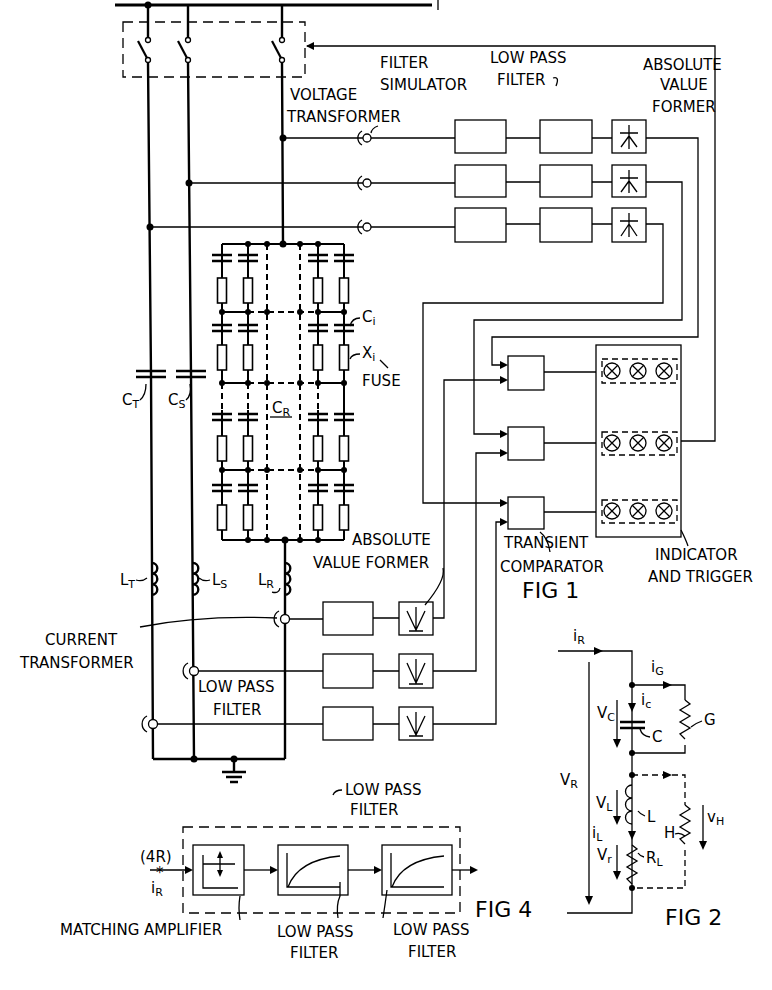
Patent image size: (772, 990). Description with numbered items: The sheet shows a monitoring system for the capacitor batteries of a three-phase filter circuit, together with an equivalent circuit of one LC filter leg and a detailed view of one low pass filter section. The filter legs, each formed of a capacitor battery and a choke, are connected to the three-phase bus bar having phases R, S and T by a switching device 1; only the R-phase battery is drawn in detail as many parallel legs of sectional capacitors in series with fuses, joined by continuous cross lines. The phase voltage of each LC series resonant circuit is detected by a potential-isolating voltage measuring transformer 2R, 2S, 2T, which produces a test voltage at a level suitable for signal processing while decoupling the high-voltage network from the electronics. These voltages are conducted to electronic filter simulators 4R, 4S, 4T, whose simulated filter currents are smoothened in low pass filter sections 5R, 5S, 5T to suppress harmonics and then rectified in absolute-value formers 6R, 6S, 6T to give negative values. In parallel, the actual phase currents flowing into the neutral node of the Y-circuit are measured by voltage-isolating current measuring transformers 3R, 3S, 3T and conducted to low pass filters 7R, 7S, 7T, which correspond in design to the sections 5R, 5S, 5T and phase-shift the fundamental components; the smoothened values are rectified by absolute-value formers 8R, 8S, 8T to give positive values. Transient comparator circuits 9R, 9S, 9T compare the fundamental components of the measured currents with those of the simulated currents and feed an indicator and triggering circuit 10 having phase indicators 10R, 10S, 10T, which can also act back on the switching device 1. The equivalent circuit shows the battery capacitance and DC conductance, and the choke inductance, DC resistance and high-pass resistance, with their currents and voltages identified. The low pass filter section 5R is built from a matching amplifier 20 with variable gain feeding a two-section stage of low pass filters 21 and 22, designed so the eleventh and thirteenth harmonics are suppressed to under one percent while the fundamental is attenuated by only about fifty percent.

In FIG. 1, the switching device 1 is at (305, 69).
In FIG. 1, the potential-isolating voltage measuring transformer 2R is at (371, 142).
In FIG. 1, the potential-isolating voltage measuring transformer 2S is at (371, 187).
In FIG. 1, the potential-isolating voltage measuring transformer 2T is at (371, 231).
In FIG. 1, the voltage-isolating current measuring transformer 3R is at (281, 619).
In FIG. 1, the voltage-isolating current measuring transformer 3S is at (190, 668).
In FIG. 1, the voltage-isolating current measuring transformer 3T is at (149, 722).
In FIG. 1, the electronic filter simulator 4R is at (457, 93).
In FIG. 1, the electronic filter simulator 4S is at (455, 172).
In FIG. 1, the electronic filter simulator 4T is at (490, 242).
In FIG. 1, the low pass filter section 5R is at (548, 120).
In FIG. 4, the low pass filter section 5R is at (316, 827).
In FIG. 1, the low pass filter section 5S is at (540, 172).
In FIG. 1, the low pass filter section 5T is at (578, 242).
In FIG. 1, the absolute-value former 6R is at (637, 62).
In FIG. 1, the absolute-value former 6S is at (649, 168).
In FIG. 1, the absolute-value former 6T is at (620, 242).
In FIG. 1, the low pass filter 7R is at (338, 602).
In FIG. 1, the low pass filter 7S is at (323, 666).
In FIG. 1, the low pass filter 7T is at (362, 740).
In FIG. 1, the absolute-value former 8R is at (402, 602).
In FIG. 1, the absolute-value former 8S is at (433, 660).
In FIG. 1, the absolute-value former 8T is at (433, 737).
In FIG. 1, the transient comparator circuit 9R is at (540, 356).
In FIG. 1, the transient comparator circuit 9S is at (540, 427).
In FIG. 1, the transient comparator circuit 9T is at (540, 497).
In FIG. 1, the indicator and triggering circuit 10 is at (638, 460).
In FIG. 1, the phase indicator 10R is at (618, 383).
In FIG. 1, the phase indicator 10S is at (622, 420).
In FIG. 1, the phase indicator 10T is at (622, 488).
In FIG. 4, the matching amplifier 20 is at (244, 878).
In FIG. 4, the low pass filter 21 is at (348, 878).
In FIG. 4, the low pass filter 22 is at (390, 855).